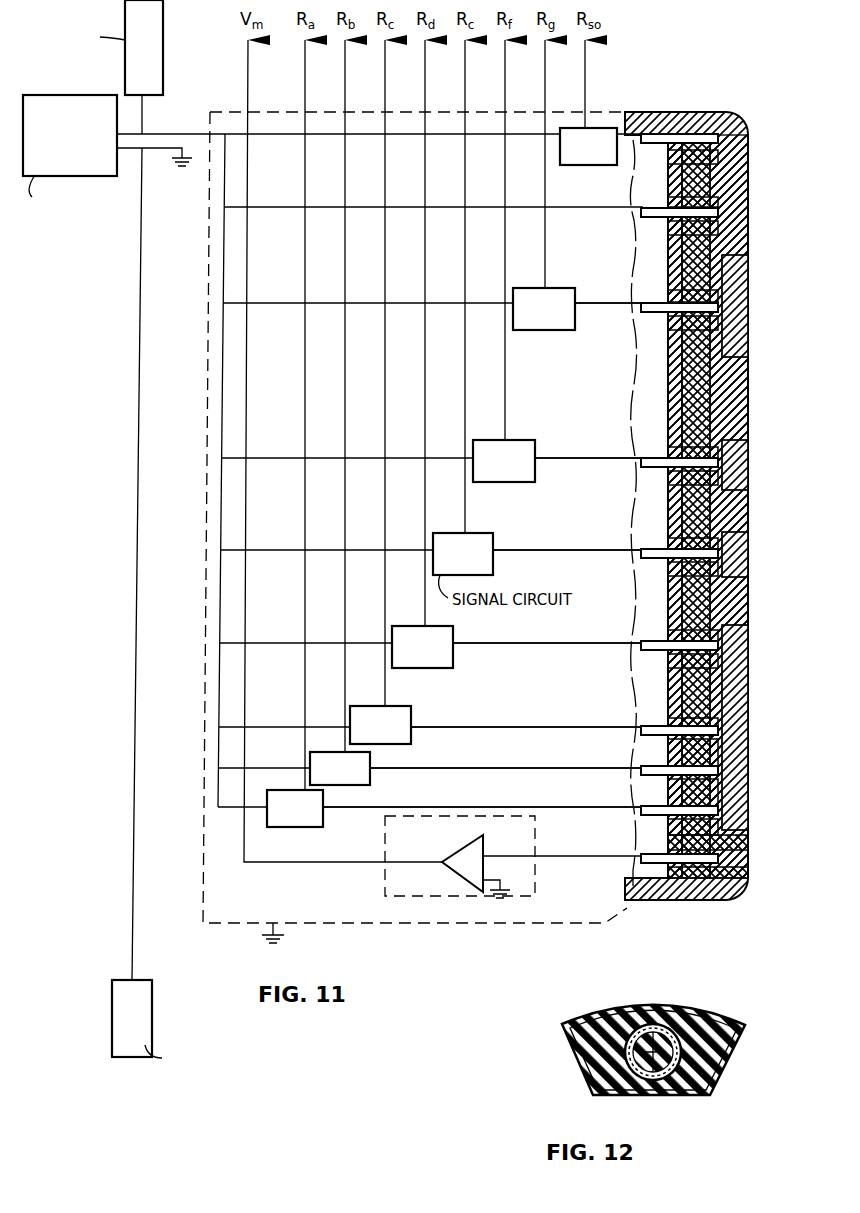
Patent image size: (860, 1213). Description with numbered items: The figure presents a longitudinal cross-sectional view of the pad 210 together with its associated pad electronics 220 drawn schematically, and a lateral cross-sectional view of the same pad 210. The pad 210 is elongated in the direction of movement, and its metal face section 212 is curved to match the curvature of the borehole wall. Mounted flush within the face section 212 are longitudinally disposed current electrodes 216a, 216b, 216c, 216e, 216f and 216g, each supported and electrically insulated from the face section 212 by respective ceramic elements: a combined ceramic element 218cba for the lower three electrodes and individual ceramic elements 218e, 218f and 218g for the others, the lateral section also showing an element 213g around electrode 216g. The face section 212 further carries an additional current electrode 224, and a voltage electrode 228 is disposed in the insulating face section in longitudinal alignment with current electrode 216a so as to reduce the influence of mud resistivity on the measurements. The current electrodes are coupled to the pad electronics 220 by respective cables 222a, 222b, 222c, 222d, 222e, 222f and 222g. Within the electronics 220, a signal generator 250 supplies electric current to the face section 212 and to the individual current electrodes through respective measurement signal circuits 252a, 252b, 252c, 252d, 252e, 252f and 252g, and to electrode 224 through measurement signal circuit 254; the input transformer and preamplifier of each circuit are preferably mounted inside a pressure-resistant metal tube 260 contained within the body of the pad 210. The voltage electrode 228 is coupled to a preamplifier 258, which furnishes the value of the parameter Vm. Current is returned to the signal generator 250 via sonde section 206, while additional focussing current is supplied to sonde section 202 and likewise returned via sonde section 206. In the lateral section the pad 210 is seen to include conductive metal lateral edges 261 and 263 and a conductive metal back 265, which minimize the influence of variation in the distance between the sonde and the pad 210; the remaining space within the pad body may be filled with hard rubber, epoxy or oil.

In FIG. 11, the sonde section 202 is at (155, 40).
In FIG. 11, the sonde section 206 is at (148, 1010).
In FIG. 11, the pad 210 is at (696, 112).
In FIG. 12, the pad 210 is at (590, 1000).
In FIG. 11, the metal face section 212 is at (748, 196).
In FIG. 12, the metal face section 212 is at (630, 1003).
In FIG. 12, the insulating sleeve 213g is at (645, 1002).
In FIG. 11, the current electrode 216a is at (740, 770).
In FIG. 11, the current electrode 216b is at (740, 733).
In FIG. 11, the current electrode 216c is at (740, 647).
In FIG. 11, the current electrode 216e is at (740, 555).
In FIG. 11, the current electrode 216f is at (740, 464).
In FIG. 11, the current electrode 216g is at (740, 300).
In FIG. 12, the current electrode 216g is at (655, 1000).
In FIG. 11, the ceramic element 218cba is at (748, 628).
In FIG. 11, the ceramic element 218e is at (740, 535).
In FIG. 11, the ceramic element 218f is at (740, 444).
In FIG. 11, the ceramic element 218g is at (740, 255).
In FIG. 11, the pad electronics 220 is at (235, 110).
In FIG. 12, the pad electronics 220 is at (740, 1027).
In FIG. 11, the cable 222a is at (592, 807).
In FIG. 11, the cable 222b is at (592, 768).
In FIG. 11, the cable 222c is at (595, 727).
In FIG. 11, the cable 222d is at (605, 643).
In FIG. 11, the cable 222e is at (612, 550).
In FIG. 11, the cable 222f is at (622, 458).
In FIG. 11, the cable 222g is at (628, 303).
In FIG. 12, the cable 222g is at (685, 1012).
In FIG. 11, the current electrode 224 is at (748, 140).
In FIG. 11, the voltage electrode 228 is at (740, 858).
In FIG. 11, the signal generator 250 is at (105, 537).
In FIG. 11, the measurement signal circuit 252a is at (295, 808).
In FIG. 11, the measurement signal circuit 252b is at (340, 768).
In FIG. 11, the measurement signal circuit 252c is at (380, 725).
In FIG. 11, the measurement signal circuit 252d is at (422, 647).
In FIG. 11, the measurement signal circuit 252e is at (463, 554).
In FIG. 11, the measurement signal circuit 252f is at (504, 461).
In FIG. 11, the measurement signal circuit 252g is at (544, 309).
In FIG. 11, the measurement signal circuit 254 is at (588, 146).
In FIG. 11, the preamplifier 258 is at (470, 855).
In FIG. 11, the pressure-resistant metal tube 260 is at (700, 182).
In FIG. 12, the pressure-resistant metal tube 260 is at (580, 1043).
In FIG. 12, the conductive metal lateral edge 261 is at (590, 1080).
In FIG. 12, the conductive metal lateral edge 263 is at (725, 1068).
In FIG. 12, the conductive metal back 265 is at (677, 1095).